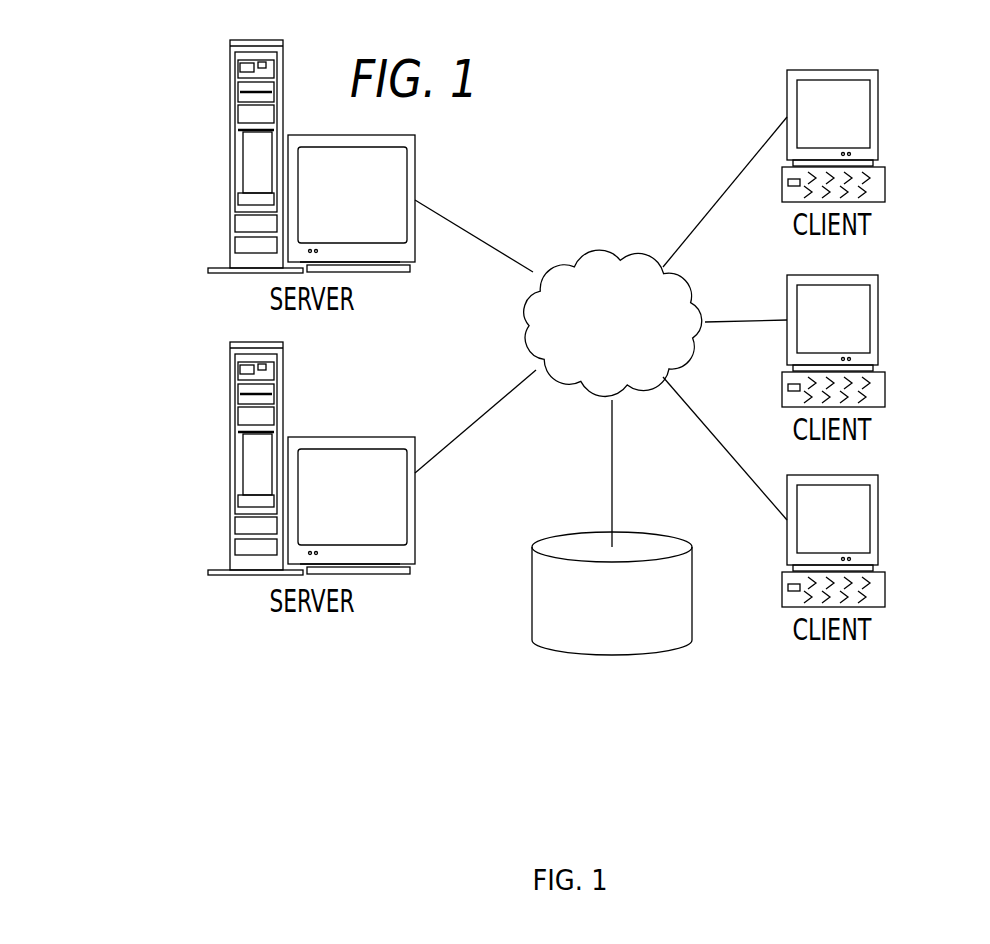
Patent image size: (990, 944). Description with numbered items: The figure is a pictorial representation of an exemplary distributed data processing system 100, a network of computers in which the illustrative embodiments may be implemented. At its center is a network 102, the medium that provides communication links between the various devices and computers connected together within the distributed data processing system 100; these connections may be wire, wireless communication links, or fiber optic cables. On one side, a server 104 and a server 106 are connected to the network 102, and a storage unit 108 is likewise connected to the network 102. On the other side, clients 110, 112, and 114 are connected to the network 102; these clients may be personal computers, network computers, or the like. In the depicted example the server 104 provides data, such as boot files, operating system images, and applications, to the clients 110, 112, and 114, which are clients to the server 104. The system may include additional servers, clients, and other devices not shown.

The distributed data processing system 100 is at (675, 88).
The network 102 is at (578, 252).
The server 104 is at (232, 160).
The server 106 is at (232, 460).
The storage unit 108 is at (592, 655).
The client 110 is at (878, 116).
The client 112 is at (878, 320).
The client 114 is at (878, 520).